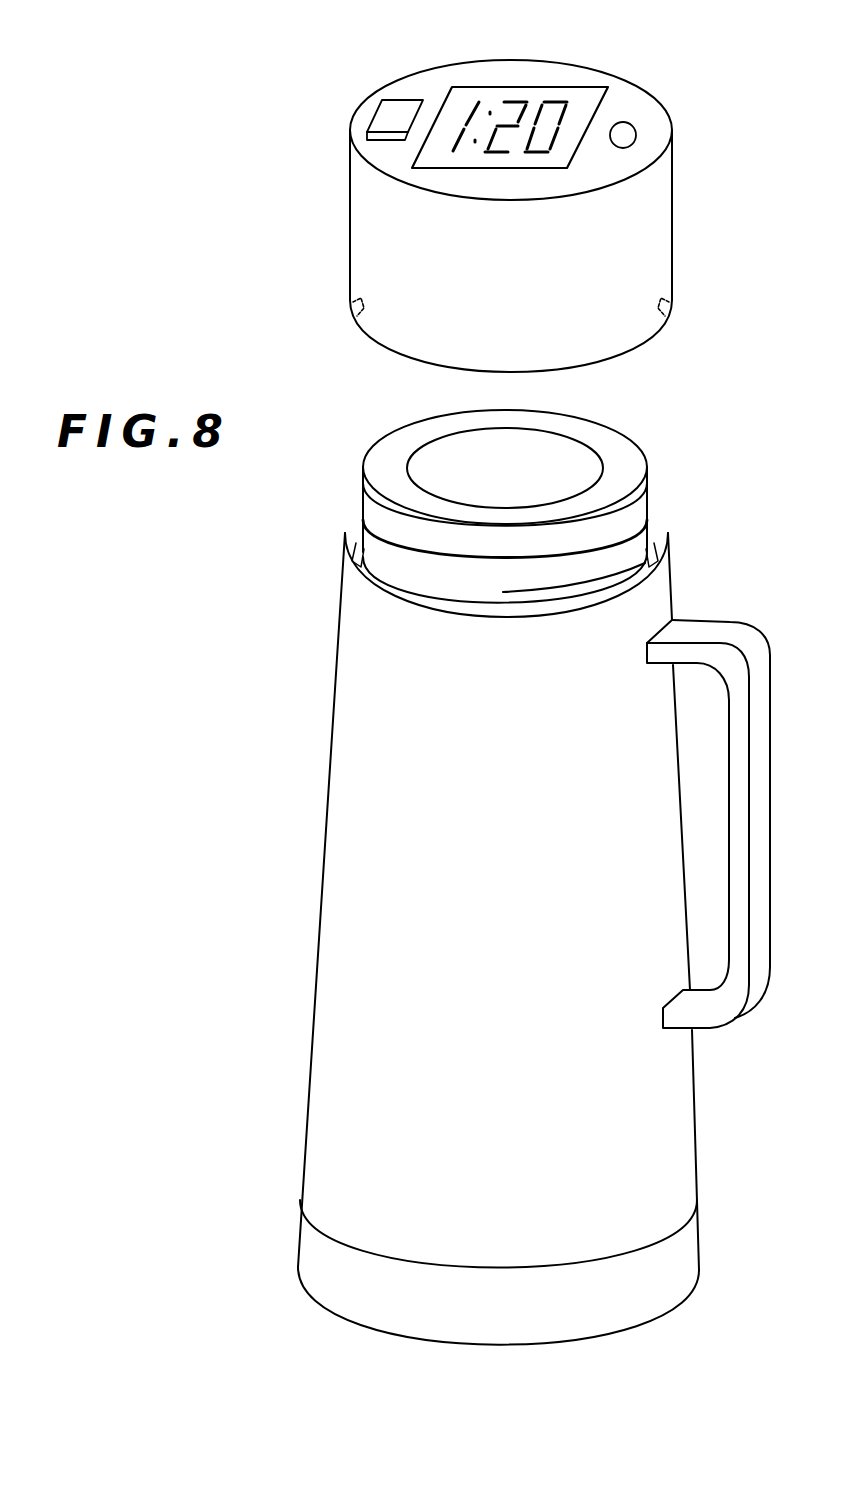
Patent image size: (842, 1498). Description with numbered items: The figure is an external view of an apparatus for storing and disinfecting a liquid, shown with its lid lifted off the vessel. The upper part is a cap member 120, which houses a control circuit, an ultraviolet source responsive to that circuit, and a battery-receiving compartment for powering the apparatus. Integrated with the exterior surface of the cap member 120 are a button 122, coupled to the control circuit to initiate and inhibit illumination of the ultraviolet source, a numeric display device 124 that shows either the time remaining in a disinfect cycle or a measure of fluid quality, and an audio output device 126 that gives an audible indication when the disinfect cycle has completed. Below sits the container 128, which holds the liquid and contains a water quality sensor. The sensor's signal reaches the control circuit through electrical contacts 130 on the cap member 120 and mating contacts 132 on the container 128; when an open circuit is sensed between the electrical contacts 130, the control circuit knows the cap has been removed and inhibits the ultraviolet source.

The cap member 120 is at (673, 226).
The button 122 is at (380, 120).
The numeric display device 124 is at (523, 87).
The audio output device 126 is at (634, 126).
The container 128 is at (324, 836).
The electrical contacts 130 is at (352, 323).
The mating contacts 132 is at (352, 545).